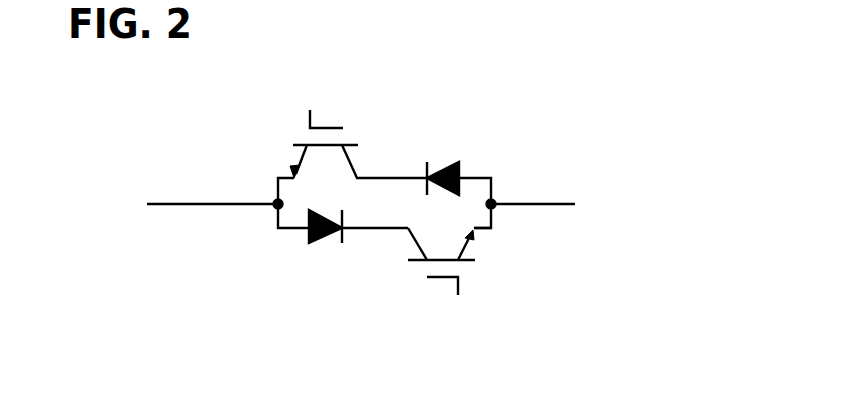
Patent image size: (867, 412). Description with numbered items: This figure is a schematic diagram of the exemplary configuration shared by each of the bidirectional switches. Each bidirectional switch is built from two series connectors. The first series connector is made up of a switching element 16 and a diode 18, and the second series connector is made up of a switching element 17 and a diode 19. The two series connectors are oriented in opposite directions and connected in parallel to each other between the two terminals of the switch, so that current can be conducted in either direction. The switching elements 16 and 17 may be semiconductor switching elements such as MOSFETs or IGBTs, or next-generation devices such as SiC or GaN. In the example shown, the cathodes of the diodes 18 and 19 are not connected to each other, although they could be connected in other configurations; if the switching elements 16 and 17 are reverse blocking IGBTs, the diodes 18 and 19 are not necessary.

The switching element 16 is at (353, 163).
The switching element 17 is at (415, 240).
The diode 18 is at (443, 163).
The diode 19 is at (320, 242).